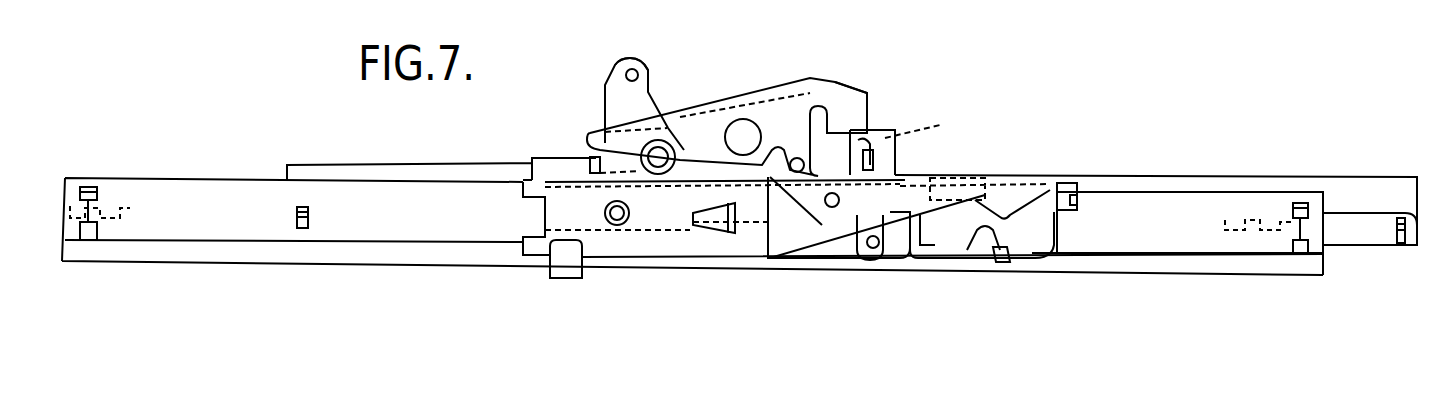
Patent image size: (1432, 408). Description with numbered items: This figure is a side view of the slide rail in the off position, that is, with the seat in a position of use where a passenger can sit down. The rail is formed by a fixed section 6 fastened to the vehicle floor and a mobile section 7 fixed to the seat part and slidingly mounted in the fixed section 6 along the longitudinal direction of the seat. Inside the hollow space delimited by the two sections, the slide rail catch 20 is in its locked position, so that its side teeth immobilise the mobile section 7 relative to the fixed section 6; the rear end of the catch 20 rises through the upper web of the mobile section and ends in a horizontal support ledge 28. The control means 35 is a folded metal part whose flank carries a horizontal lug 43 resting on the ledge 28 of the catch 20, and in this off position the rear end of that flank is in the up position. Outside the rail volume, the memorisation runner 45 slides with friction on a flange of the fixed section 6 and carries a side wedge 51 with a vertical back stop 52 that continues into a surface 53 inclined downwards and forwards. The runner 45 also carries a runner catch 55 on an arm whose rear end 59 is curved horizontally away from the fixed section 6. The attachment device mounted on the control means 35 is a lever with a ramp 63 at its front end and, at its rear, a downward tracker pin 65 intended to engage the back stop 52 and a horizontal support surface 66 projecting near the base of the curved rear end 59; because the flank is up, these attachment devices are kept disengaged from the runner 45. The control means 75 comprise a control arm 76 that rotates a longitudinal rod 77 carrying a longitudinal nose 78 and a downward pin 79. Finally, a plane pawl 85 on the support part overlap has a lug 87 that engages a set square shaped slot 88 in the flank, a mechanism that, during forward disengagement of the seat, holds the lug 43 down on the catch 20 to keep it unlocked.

The fixed section 6 is at (198, 190).
The mobile section 7 is at (417, 176).
The slide rail catch 20 is at (713, 216).
The horizontal support ledge 28 is at (897, 135).
The control means 35 is at (635, 282).
The horizontal lug 43 is at (882, 130).
The memorisation runner 45 is at (1036, 262).
The side wedge 51 is at (965, 258).
The back stop 52 is at (1005, 250).
The inclined surface 53 is at (921, 245).
The runner catch 55 is at (962, 172).
The rear end of the arm 59 is at (1073, 208).
The ramp 63 is at (768, 248).
The tracker pin 65 is at (1006, 212).
The support surface 66 is at (1071, 183).
The control means 75 is at (672, 89).
The control arm 76 is at (605, 93).
The longitudinal rod 77 is at (758, 103).
The longitudinal nose 78 is at (862, 105).
The pin 79 is at (797, 158).
The plane pawl 85 is at (874, 250).
The lug 87 is at (827, 248).
The set square shaped slot 88 is at (877, 158).